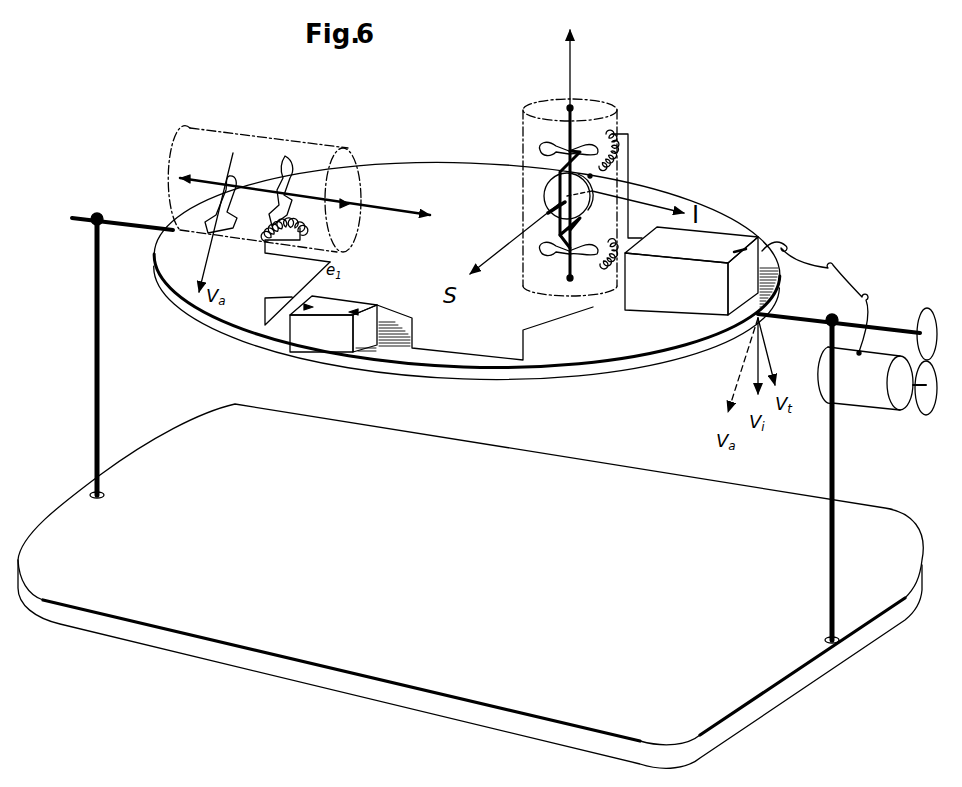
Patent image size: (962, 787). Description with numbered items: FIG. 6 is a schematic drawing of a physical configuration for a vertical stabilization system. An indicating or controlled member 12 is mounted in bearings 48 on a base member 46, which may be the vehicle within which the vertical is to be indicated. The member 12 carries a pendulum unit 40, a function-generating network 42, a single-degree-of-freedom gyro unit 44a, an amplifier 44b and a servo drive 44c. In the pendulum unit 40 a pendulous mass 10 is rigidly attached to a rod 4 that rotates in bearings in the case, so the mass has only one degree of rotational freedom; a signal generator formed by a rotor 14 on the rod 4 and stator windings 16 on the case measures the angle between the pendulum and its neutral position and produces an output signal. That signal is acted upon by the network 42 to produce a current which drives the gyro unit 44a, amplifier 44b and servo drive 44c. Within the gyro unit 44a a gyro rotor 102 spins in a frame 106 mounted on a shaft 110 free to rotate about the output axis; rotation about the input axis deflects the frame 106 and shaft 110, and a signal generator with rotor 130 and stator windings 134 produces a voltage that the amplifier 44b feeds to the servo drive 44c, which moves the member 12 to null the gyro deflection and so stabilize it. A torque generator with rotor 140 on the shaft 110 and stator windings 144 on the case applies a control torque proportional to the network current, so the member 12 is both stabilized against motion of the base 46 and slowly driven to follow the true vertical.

The rod 4 is at (212, 178).
The pendulous mass 10 is at (205, 218).
The controlled member 12 is at (222, 330).
The rotor 14 is at (297, 160).
The stator windings 16 is at (303, 233).
The pendulum unit 40 is at (177, 152).
The function-generating network 42 is at (333, 355).
The gyro unit 44a is at (525, 108).
The amplifier 44b is at (722, 235).
The servo drive 44c is at (873, 410).
The base member 46 is at (806, 698).
The bearings 48 is at (104, 238).
The gyro rotor 102 is at (545, 196).
The frame 106 is at (558, 170).
The shaft 110 is at (574, 128).
The rotor 130 is at (542, 148).
The stator windings 134 is at (612, 147).
The rotor 140 is at (541, 252).
The stator windings 144 is at (600, 266).